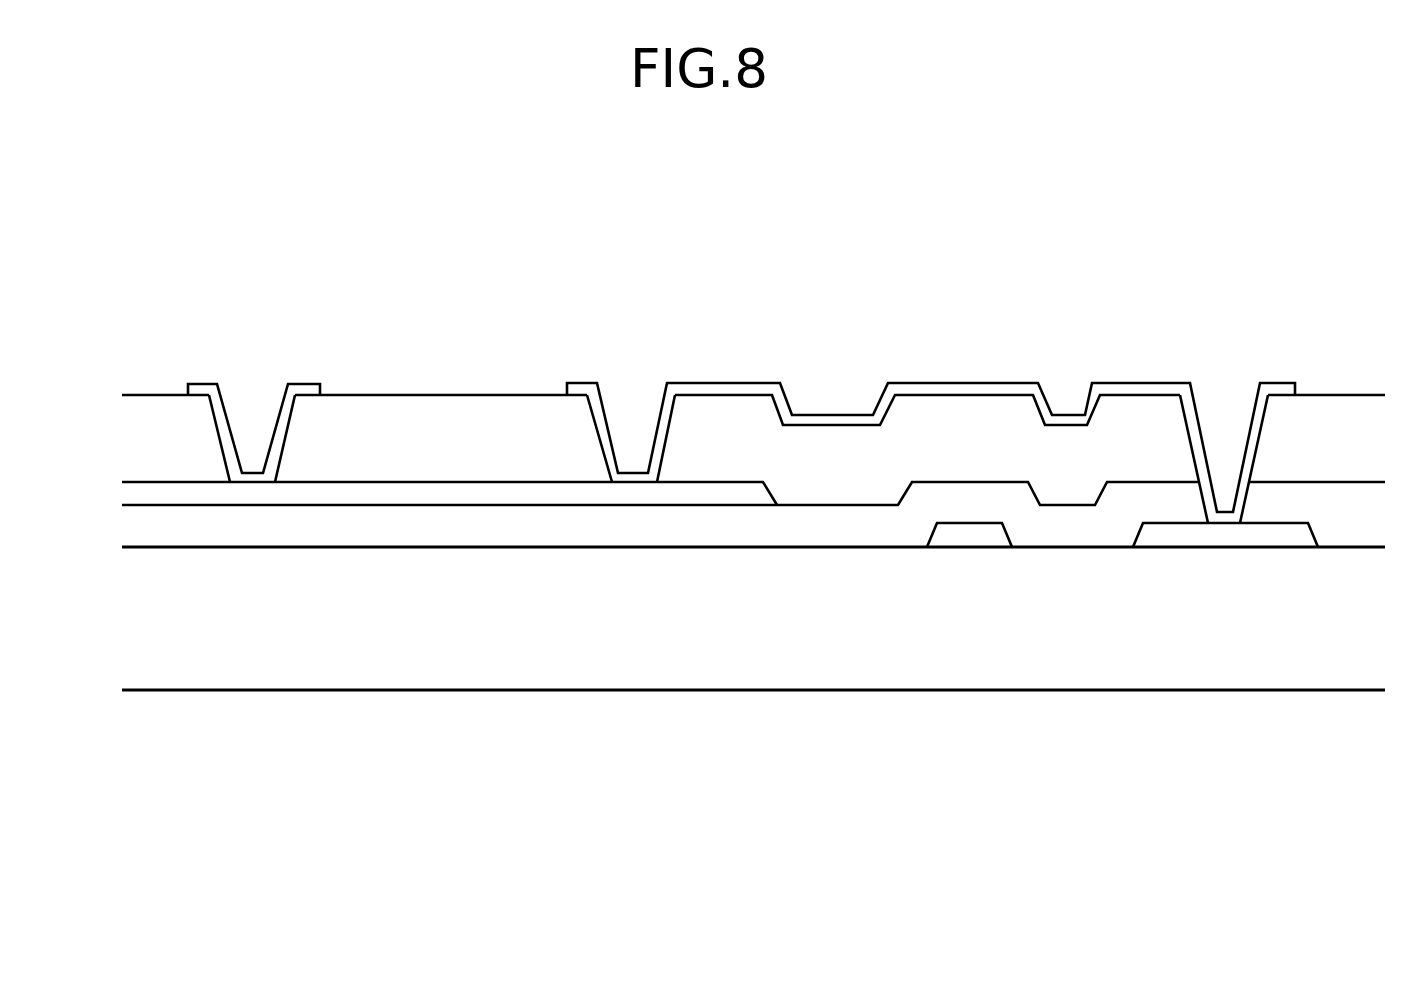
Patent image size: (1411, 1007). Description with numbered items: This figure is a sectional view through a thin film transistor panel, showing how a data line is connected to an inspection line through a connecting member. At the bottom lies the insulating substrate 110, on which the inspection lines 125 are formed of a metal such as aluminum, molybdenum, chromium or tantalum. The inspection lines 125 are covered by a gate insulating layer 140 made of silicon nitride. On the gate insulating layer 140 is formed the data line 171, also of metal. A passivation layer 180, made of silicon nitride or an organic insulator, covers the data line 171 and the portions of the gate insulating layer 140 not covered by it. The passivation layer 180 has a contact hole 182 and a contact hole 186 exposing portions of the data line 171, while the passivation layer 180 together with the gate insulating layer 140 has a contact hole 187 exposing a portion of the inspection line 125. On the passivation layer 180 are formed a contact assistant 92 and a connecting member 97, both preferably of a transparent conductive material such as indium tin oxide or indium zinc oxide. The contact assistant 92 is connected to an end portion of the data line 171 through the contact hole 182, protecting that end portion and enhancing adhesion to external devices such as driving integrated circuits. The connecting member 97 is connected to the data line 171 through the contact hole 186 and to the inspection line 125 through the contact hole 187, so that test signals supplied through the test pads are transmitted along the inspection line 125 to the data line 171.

The contact assistant 92 is at (197, 383).
The connecting member 97 is at (752, 381).
The insulating substrate 110 is at (498, 658).
The inspection line 125 is at (983, 533).
The gate insulating layer 140 is at (337, 535).
The data line 171 is at (493, 493).
The passivation layer 180 is at (408, 417).
The contact hole 182 is at (252, 374).
The contact hole 186 is at (628, 374).
The contact hole 187 is at (1225, 374).